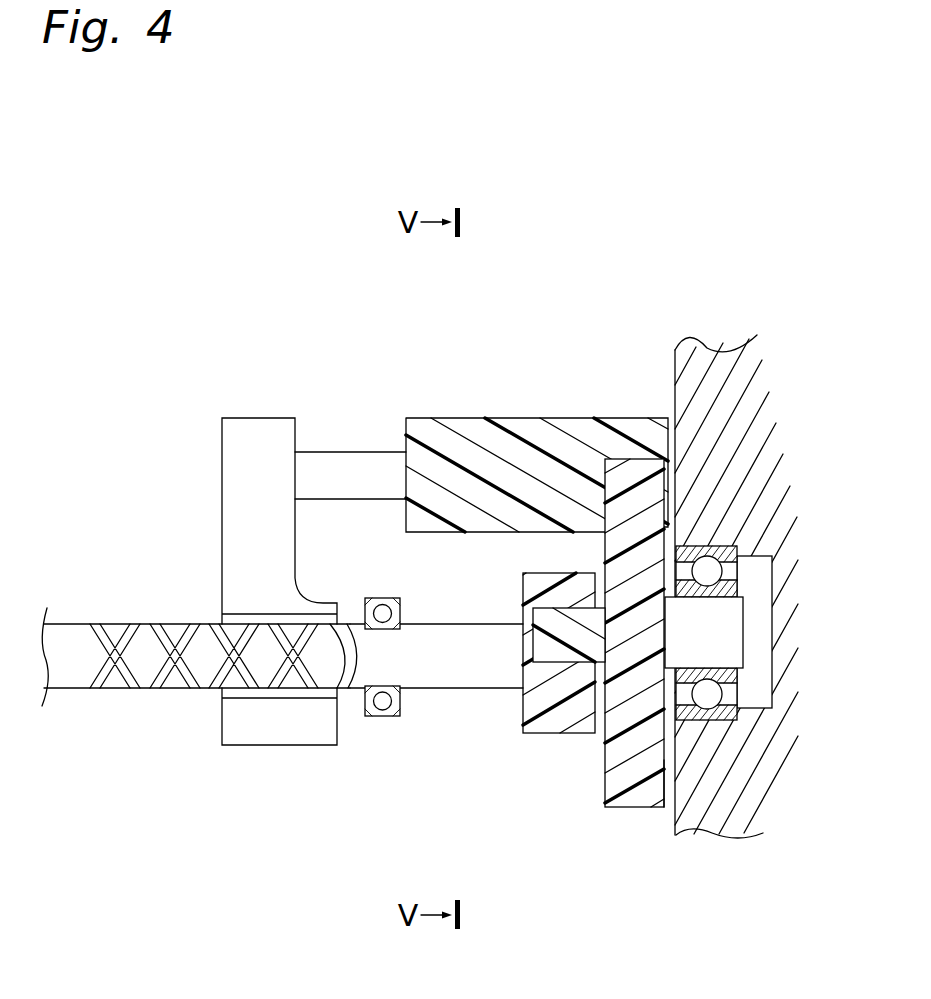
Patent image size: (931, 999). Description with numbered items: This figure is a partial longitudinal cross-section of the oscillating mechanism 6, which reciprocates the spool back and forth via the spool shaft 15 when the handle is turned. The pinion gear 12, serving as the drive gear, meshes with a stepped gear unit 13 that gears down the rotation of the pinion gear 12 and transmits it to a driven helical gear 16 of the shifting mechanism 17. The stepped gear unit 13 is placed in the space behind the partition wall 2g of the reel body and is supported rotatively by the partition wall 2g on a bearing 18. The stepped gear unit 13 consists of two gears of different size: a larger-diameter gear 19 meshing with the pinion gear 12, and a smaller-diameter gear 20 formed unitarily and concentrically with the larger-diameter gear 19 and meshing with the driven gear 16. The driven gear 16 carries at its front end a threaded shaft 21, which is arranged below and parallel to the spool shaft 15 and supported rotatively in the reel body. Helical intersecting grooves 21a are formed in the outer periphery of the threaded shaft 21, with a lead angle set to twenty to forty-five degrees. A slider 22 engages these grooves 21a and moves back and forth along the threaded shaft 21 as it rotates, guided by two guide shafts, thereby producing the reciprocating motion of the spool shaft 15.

The partition wall 2g is at (704, 810).
The oscillating mechanism 6 is at (355, 768).
The pinion gear 12 is at (552, 432).
The stepped gear unit 13 is at (614, 814).
The spool shaft 15 is at (332, 463).
The driven helical gear 16 is at (548, 700).
The shifting mechanism 17 is at (441, 712).
The bearing 18 is at (724, 546).
The larger-diameter gear 19 is at (651, 788).
The smaller-diameter gear 20 is at (572, 655).
The threaded shaft 21 is at (73, 673).
The helical intersecting grooves 21a is at (100, 626).
The slider 22 is at (253, 424).